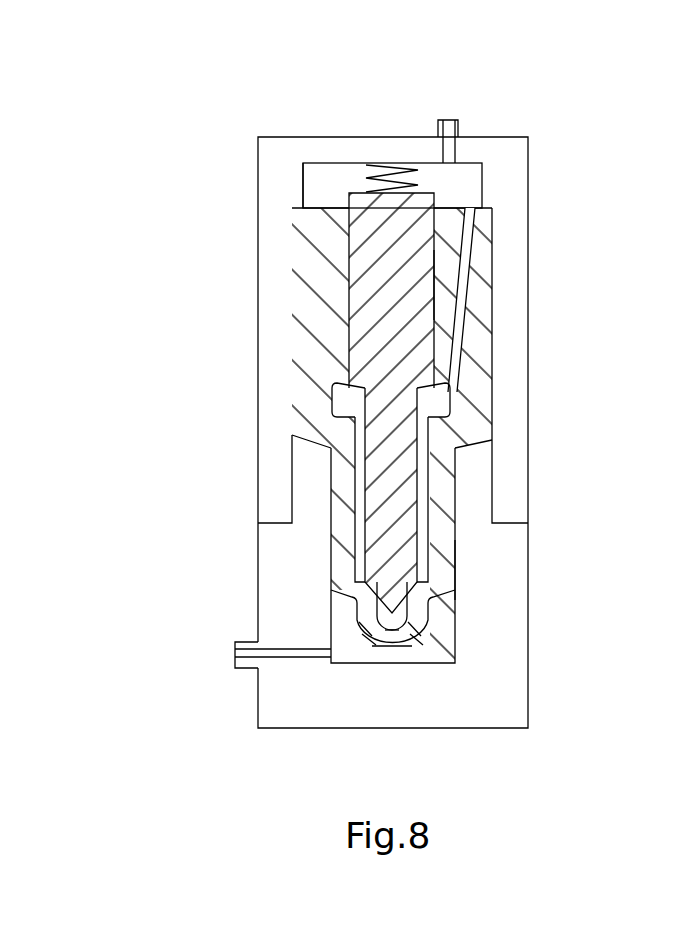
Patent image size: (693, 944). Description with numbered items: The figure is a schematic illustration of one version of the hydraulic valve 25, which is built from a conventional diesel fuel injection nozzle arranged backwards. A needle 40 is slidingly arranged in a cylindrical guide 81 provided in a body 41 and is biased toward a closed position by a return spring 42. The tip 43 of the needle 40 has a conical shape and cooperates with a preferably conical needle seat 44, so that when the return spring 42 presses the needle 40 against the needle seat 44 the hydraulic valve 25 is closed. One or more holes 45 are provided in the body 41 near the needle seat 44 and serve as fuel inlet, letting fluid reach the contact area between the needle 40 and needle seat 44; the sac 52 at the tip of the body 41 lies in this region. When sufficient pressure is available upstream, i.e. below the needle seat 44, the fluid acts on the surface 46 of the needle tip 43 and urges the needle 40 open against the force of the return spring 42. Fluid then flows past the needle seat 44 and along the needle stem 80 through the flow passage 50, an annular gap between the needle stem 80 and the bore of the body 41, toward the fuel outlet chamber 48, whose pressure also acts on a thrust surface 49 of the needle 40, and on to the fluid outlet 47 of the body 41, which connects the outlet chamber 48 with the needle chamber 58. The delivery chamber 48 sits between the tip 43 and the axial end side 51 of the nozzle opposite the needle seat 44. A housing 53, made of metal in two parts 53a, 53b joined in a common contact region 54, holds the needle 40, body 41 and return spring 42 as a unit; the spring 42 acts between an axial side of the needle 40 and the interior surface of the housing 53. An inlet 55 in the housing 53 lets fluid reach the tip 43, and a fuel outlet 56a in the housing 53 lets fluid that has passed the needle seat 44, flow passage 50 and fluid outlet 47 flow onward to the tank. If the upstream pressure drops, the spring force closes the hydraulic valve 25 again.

The hydraulic valve 25 is at (579, 161).
The needle 40 is at (367, 256).
The body 41 is at (330, 318).
The return spring 42 is at (390, 165).
The tip 43 is at (392, 588).
The needle seat 44 is at (397, 589).
The holes 45 is at (366, 633).
The surface 46 is at (408, 608).
The fluid outlet 47 is at (468, 230).
The fuel outlet chamber 48 is at (437, 403).
The thrust surface 49 is at (335, 390).
The flow passage 50 is at (360, 500).
The axial end side 51 is at (380, 203).
The sac 52 is at (400, 640).
The housing 53 is at (553, 424).
The first housing part 53a is at (512, 448).
The second housing part 53b is at (503, 552).
The common contact region 54 is at (292, 478).
The inlet 55 is at (277, 655).
The fuel outlet 56a is at (448, 135).
The needle chamber 58 is at (325, 173).
The needle stem 80 is at (390, 533).
The cylindrical guide 81 is at (432, 301).